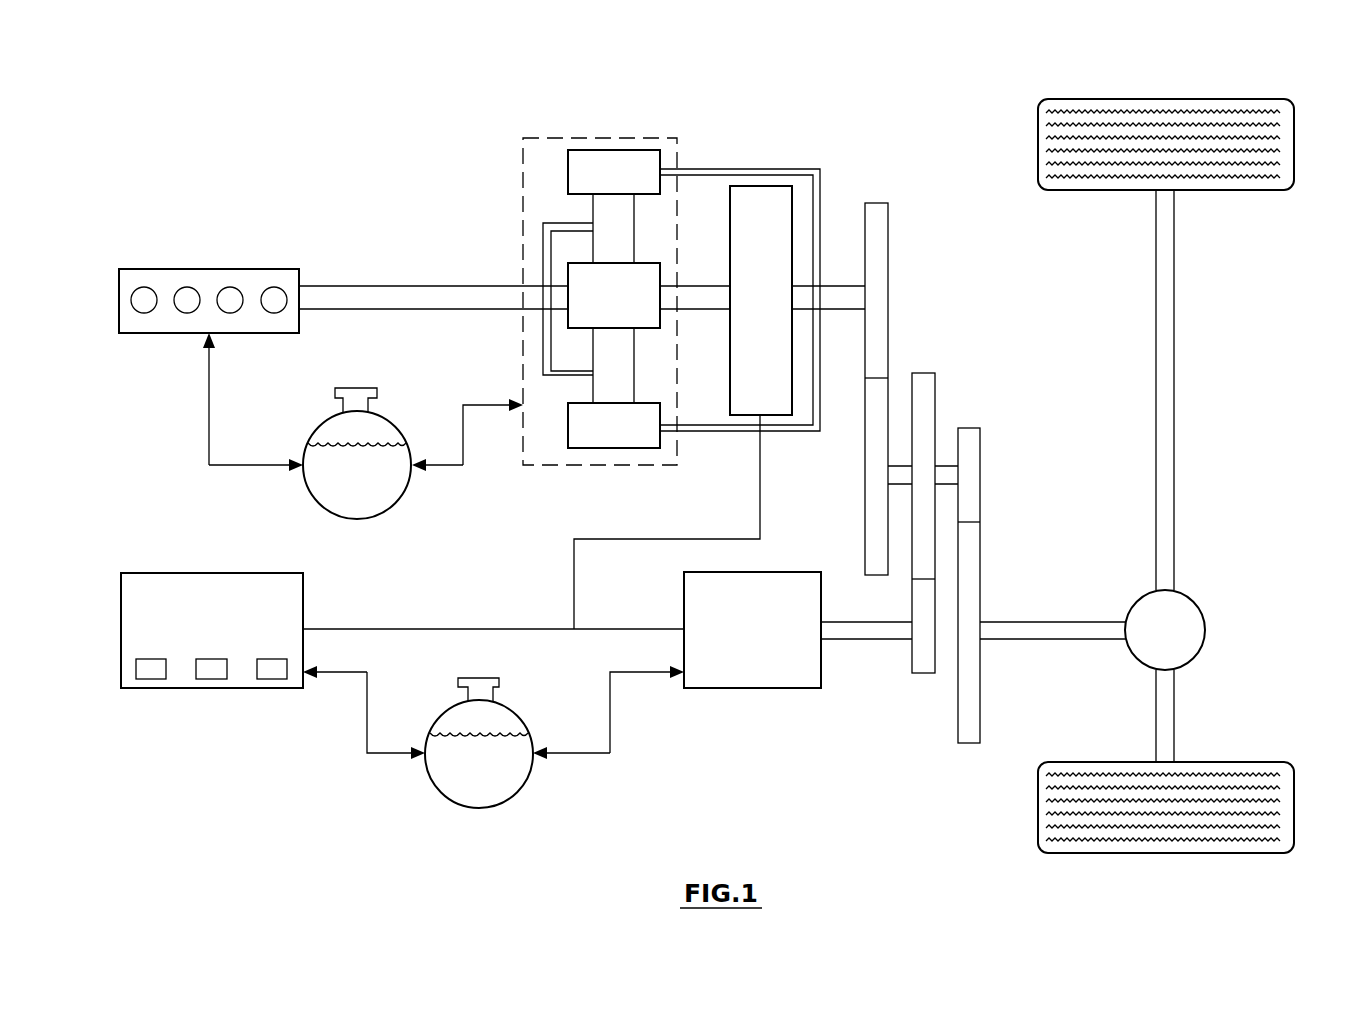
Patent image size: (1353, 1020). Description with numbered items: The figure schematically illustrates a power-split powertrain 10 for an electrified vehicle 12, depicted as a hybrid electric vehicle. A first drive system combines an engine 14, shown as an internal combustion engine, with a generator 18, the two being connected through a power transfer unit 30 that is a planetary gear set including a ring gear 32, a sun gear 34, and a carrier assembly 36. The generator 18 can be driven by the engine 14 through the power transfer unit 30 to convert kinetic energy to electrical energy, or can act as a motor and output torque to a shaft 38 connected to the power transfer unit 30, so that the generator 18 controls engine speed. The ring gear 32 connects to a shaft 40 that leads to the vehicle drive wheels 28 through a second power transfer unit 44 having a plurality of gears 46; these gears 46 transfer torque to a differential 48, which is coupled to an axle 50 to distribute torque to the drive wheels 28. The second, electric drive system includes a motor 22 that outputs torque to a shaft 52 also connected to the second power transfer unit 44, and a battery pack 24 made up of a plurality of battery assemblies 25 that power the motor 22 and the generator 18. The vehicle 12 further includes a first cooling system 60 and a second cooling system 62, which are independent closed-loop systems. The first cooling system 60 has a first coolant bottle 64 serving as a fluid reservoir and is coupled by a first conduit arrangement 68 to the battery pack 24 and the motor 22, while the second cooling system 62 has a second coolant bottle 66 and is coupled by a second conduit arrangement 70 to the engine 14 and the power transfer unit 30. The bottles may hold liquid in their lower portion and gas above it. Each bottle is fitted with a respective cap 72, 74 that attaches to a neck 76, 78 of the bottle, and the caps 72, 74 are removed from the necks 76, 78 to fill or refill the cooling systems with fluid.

The powertrain 10 is at (362, 165).
The electrified vehicle 12 is at (790, 92).
The engine 14 is at (138, 269).
The generator 18 is at (740, 186).
The motor 22 is at (821, 672).
The battery pack 24 is at (140, 573).
The battery assemblies 25 is at (166, 669).
The vehicle drive wheels 28 is at (1294, 800).
The power transfer unit 30 is at (590, 466).
The ring gear 32 is at (568, 172).
The sun gear 34 is at (568, 270).
The carrier assembly 36 is at (543, 358).
The shaft 38 is at (695, 286).
The shaft 40 is at (840, 286).
The second power transfer unit 44 is at (965, 325).
The gears 46 is at (888, 339).
The differential 48 is at (1198, 655).
The axle 50 is at (1175, 378).
The shaft 52 is at (877, 640).
The first cooling system 60 is at (495, 766).
The second cooling system 62 is at (391, 472).
The first coolant bottle 64 is at (510, 800).
The second coolant bottle 66 is at (357, 519).
The first conduit arrangement 68 is at (367, 733).
The second conduit arrangement 70 is at (209, 408).
The cap 72 is at (488, 678).
The cap 74 is at (345, 388).
The neck 76 is at (493, 693).
The neck 78 is at (377, 403).